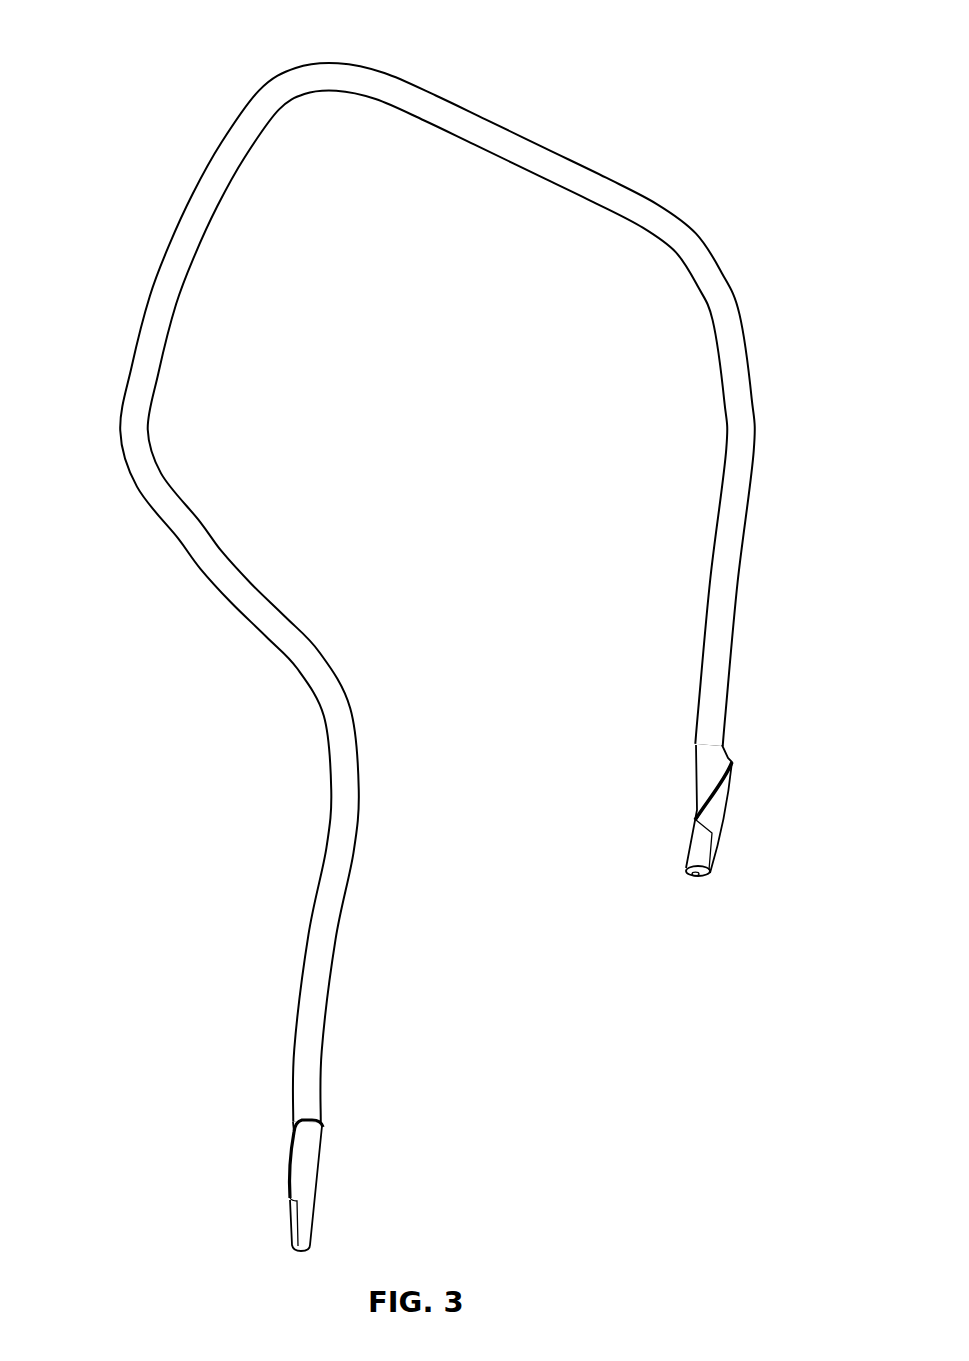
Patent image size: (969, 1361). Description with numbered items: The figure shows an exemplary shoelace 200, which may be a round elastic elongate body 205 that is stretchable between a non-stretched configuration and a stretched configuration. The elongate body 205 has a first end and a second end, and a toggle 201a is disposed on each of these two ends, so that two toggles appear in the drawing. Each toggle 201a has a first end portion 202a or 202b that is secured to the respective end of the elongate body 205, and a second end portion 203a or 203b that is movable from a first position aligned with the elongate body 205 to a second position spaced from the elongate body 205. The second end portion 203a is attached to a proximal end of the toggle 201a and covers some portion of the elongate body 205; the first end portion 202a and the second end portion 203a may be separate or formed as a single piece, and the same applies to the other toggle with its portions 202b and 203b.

The shoelace 200 is at (140, 37).
The elongate body 205 is at (178, 293).
The first toggle 201a is at (518, 998).
The first end portion 202a is at (290, 1240).
The first end portion 202b is at (687, 863).
The second end portion 203a is at (322, 1109).
The second end portion 203b is at (697, 792).